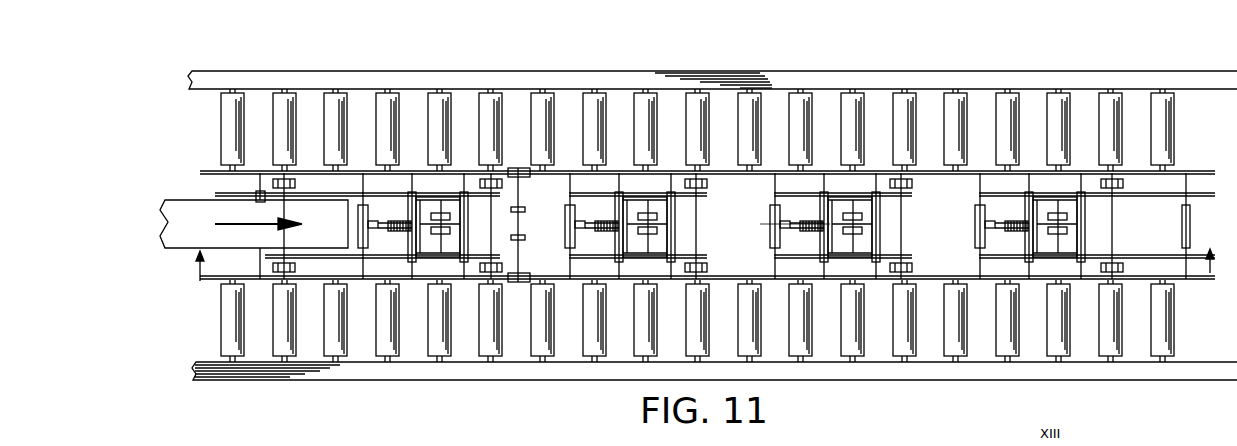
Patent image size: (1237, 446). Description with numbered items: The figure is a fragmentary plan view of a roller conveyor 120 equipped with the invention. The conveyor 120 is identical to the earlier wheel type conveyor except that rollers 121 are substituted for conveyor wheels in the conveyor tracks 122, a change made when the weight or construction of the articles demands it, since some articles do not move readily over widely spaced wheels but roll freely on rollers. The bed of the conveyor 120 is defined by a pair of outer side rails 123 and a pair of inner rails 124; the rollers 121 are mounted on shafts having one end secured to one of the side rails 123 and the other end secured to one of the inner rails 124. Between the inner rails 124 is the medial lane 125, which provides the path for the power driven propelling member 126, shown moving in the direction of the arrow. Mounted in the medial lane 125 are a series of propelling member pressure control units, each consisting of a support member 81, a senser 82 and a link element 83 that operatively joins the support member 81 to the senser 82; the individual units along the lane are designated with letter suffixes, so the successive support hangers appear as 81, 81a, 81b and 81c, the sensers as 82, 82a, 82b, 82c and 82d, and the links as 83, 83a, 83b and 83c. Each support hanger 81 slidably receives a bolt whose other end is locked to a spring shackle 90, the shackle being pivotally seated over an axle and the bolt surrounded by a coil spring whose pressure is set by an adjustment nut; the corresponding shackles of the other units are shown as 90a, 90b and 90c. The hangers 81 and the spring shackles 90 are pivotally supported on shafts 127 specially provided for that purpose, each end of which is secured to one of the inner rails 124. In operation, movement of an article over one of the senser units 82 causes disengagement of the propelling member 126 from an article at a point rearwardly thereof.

The conveyor 120 is at (676, 229).
The rollers 121 is at (797, 113).
The conveyor tracks 122 is at (654, 229).
The side rails 123 is at (580, 80).
The inner rails 124 is at (207, 170).
The medial lane 125 is at (200, 180).
The propelling member 126 is at (180, 225).
The shafts 127 is at (768, 257).
The support member 81 is at (412, 237).
The support member 81a is at (617, 210).
The support member 81b is at (823, 245).
The support member 81c is at (1030, 212).
The senser 82 is at (291, 180).
The senser 82a is at (495, 176).
The senser 82b is at (700, 176).
The senser 82c is at (906, 178).
The senser 82d is at (1117, 180).
The link element 83 is at (548, 262).
The link element 83a is at (718, 193).
The link element 83b is at (912, 232).
The link element 83c is at (1185, 193).
The spring shackle 90 is at (365, 238).
The spring shackle 90a is at (565, 214).
The spring shackle 90b is at (770, 226).
The spring shackle 90c is at (977, 208).